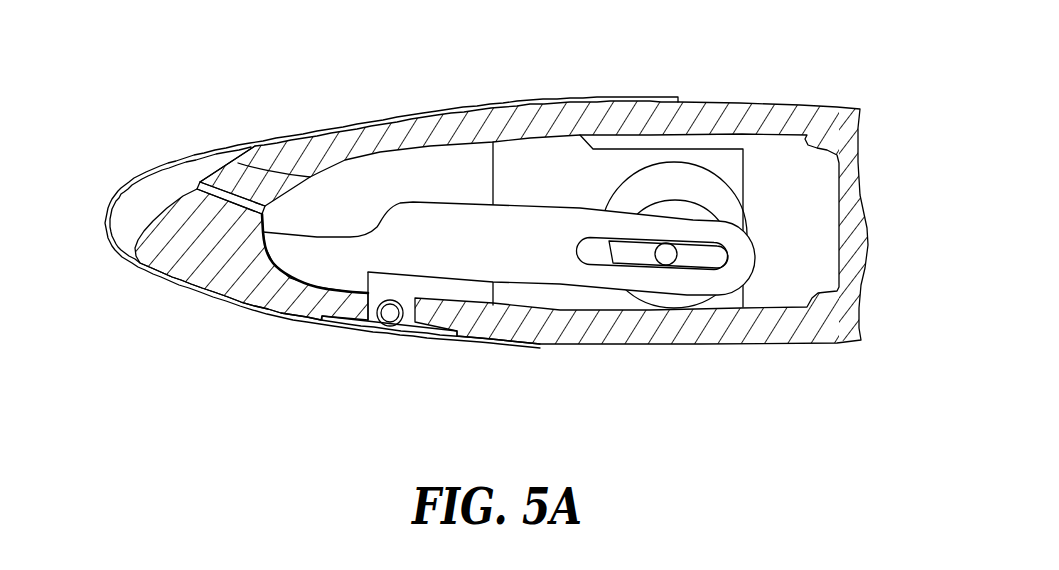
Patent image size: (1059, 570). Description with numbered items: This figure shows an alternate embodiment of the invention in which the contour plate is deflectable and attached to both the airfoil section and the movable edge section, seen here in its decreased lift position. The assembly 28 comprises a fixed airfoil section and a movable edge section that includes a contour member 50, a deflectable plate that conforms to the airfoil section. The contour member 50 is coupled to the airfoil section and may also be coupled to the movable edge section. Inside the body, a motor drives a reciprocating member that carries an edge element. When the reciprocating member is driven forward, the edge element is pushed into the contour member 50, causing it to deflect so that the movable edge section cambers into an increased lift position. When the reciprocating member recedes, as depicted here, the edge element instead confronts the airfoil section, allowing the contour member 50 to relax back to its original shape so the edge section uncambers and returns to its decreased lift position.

The assembly 28 is at (304, 54).
The contour member 50 is at (166, 157).